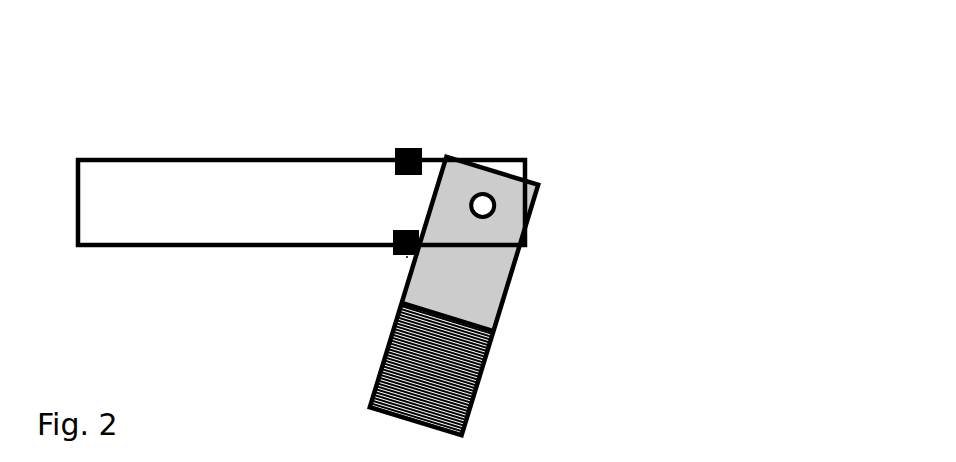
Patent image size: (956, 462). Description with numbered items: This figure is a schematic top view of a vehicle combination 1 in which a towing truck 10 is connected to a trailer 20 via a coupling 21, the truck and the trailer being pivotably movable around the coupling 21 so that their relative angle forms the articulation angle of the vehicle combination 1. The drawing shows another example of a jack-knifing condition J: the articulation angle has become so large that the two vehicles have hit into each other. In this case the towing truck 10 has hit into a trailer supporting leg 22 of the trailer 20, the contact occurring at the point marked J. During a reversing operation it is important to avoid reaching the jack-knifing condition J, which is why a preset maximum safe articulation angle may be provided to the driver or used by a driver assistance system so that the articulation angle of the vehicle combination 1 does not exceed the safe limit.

The vehicle combination 1 is at (548, 100).
The towing vehicle 10 is at (493, 332).
The trailer 20 is at (190, 245).
The coupling 21 is at (497, 203).
The trailer supporting leg 22 is at (403, 231).
The jack-knifing condition J is at (407, 257).